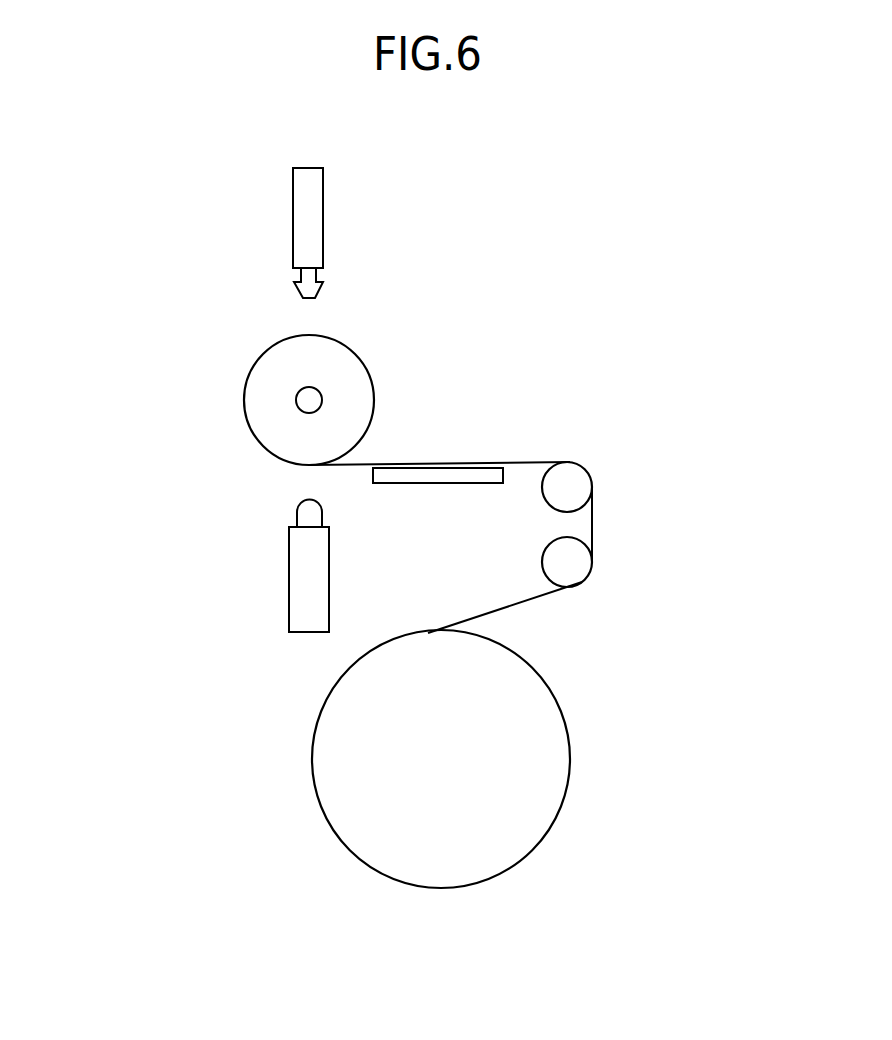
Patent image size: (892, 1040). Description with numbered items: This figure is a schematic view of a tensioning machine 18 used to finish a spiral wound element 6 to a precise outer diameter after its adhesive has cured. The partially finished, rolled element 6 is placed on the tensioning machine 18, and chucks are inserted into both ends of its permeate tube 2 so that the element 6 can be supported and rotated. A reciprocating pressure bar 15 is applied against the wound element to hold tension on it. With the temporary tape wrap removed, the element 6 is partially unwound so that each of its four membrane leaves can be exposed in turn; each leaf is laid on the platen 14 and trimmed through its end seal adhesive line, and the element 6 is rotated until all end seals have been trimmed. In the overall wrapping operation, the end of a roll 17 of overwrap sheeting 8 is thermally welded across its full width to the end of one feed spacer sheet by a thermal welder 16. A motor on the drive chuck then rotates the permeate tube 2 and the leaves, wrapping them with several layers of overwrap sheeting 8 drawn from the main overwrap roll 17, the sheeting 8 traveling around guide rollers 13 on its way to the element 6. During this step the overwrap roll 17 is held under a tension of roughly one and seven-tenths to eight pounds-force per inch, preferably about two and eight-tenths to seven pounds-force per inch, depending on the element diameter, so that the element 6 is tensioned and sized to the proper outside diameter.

The permeate tube 2 is at (323, 400).
The element 6 is at (243, 427).
The overwrap sheeting 8 is at (510, 605).
The guide rollers 13 is at (593, 567).
The platen 14 is at (466, 466).
The reciprocating pressure bar 15 is at (289, 607).
The thermal welder 16 is at (293, 249).
The roll of overwrap sheeting 17 is at (523, 813).
The tensioning machine 18 is at (200, 715).